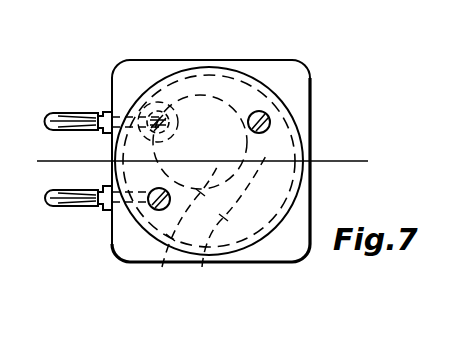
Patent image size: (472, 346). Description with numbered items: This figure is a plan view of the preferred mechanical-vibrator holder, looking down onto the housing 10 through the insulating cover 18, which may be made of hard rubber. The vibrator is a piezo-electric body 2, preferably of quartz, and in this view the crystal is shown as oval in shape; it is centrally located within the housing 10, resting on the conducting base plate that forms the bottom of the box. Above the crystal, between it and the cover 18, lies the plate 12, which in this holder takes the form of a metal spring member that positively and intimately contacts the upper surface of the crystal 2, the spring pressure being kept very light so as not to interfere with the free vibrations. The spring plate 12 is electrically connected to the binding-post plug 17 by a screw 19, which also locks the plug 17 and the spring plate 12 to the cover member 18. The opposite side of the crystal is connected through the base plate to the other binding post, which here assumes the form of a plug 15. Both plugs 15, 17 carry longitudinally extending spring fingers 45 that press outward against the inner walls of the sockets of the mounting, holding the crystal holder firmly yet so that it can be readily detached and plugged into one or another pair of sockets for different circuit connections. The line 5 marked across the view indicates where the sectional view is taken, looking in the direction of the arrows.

The housing 10 is at (232, 161).
The section line 5 is at (43, 161).
The spring fingers 45 is at (70, 127).
The binding-post plug 17 is at (80, 117).
The plug 15 is at (94, 205).
The screw 19 is at (172, 118).
The insulating cover 18 is at (259, 72).
The plate 12 is at (182, 226).
The piezo-electric body 2 is at (226, 219).